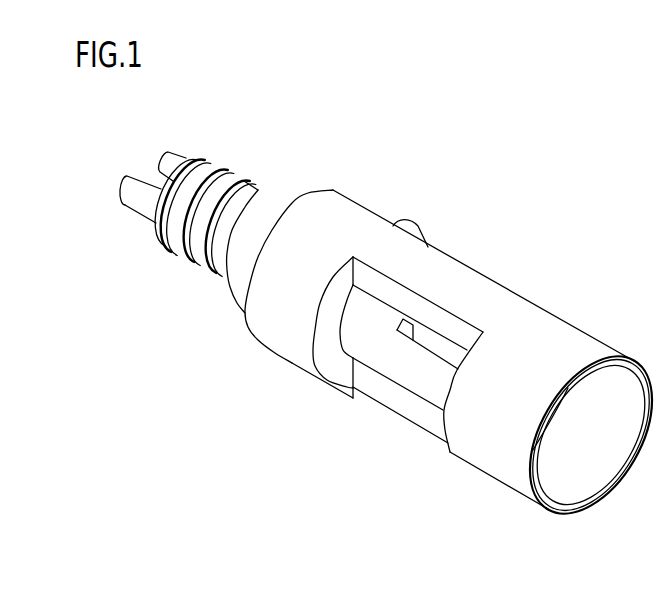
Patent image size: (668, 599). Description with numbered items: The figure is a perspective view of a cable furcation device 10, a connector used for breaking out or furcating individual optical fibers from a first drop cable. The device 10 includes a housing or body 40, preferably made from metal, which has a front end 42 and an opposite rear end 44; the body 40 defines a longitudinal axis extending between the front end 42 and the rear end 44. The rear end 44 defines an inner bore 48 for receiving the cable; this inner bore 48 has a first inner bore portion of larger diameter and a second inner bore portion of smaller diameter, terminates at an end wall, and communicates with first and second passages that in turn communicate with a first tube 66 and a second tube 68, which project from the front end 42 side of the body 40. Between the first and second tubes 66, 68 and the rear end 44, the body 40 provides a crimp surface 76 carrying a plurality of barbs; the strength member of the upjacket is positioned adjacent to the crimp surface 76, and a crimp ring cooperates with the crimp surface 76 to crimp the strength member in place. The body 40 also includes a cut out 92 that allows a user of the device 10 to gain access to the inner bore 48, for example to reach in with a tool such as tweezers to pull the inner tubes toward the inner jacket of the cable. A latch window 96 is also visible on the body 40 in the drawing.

The cable furcation device 10 is at (372, 147).
The body 40 is at (373, 213).
The front end 42 is at (125, 177).
The rear end 44 is at (555, 515).
The inner bore 48 is at (588, 460).
The first tube 66 is at (132, 209).
The second tube 68 is at (177, 153).
The crimp surface 76 is at (240, 178).
The cut out 92 is at (423, 237).
The latch window 96 is at (393, 402).